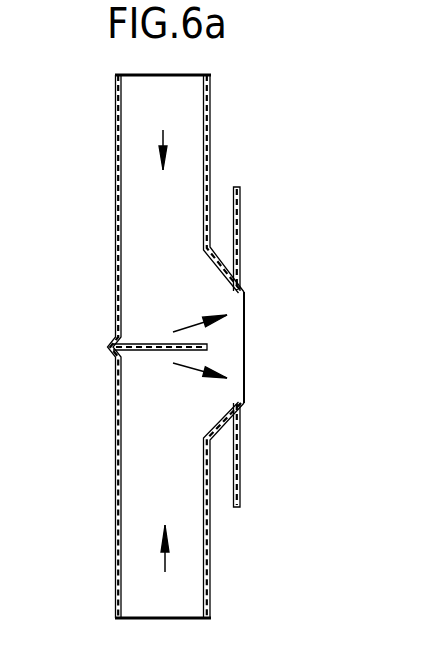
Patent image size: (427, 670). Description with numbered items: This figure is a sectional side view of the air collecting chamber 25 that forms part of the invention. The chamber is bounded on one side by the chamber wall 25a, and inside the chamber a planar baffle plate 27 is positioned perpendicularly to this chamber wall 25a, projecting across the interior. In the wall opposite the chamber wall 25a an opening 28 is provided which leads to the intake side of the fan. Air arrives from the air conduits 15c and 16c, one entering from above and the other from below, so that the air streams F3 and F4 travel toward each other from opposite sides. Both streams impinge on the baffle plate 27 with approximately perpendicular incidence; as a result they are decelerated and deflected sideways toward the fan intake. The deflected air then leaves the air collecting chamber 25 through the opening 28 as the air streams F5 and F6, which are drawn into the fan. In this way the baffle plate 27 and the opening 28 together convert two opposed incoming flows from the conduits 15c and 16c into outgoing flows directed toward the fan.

The air collecting chamber 25 is at (164, 346).
The chamber wall 25a is at (116, 228).
The air conduit 15c is at (130, 165).
The air conduit 16c is at (135, 519).
The baffle plate 27 is at (153, 343).
The opening 28 is at (225, 296).
The air stream F3 is at (163, 130).
The air stream F4 is at (165, 562).
The air stream F5 is at (197, 328).
The air stream F6 is at (197, 370).